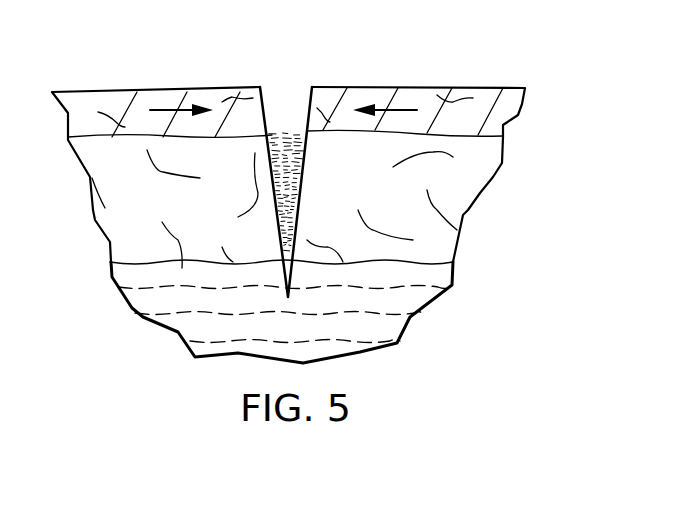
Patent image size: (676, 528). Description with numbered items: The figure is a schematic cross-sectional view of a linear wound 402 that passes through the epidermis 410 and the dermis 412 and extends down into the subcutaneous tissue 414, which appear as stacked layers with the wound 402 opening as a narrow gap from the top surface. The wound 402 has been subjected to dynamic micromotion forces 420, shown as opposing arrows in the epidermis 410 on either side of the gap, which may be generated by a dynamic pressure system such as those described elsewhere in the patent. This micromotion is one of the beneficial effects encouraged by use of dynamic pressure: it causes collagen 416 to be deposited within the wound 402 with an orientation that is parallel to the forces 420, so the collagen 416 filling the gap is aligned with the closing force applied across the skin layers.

The linear wound 402 is at (275, 105).
The epidermis 410 is at (527, 102).
The dermis 412 is at (497, 182).
The subcutaneous tissue 414 is at (407, 328).
The collagen 416 is at (290, 173).
The forces 420 is at (165, 108).